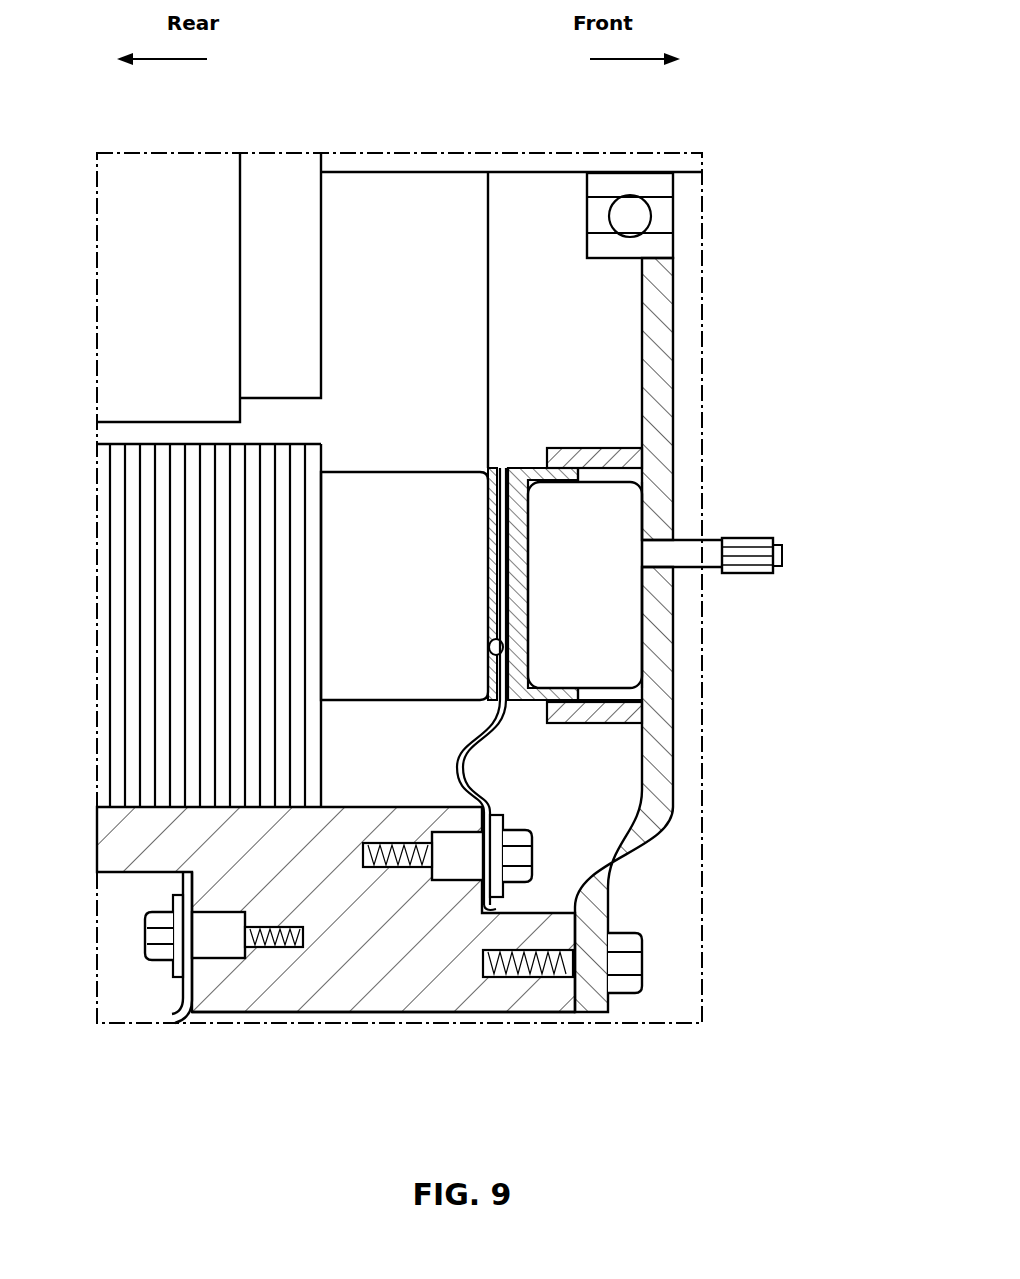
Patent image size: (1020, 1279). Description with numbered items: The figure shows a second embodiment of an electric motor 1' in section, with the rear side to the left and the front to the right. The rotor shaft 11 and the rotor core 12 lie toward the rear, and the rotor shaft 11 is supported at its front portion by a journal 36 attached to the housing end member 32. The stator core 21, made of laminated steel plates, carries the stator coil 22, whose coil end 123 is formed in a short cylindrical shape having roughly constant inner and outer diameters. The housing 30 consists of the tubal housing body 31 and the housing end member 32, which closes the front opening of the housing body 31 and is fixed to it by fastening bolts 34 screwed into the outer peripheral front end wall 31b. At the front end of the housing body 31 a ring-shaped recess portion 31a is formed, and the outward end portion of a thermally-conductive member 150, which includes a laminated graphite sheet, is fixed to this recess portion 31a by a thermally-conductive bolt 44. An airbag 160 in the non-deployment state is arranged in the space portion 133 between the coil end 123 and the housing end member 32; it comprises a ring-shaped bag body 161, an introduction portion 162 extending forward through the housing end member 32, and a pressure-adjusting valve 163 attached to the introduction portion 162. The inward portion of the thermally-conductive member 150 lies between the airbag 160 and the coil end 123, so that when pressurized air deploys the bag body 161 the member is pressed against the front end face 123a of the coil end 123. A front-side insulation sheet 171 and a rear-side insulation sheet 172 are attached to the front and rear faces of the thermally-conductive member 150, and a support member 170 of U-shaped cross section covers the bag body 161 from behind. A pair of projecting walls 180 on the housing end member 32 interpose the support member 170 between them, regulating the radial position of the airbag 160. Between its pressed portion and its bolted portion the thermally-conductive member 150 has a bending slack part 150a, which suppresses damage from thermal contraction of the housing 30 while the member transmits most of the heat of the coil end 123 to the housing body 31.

The electric motor 1' is at (450, 550).
The rotor shaft 11 is at (398, 172).
The rotor core 12 is at (146, 293).
The stator core 21 is at (186, 633).
The stator coil 22 is at (335, 443).
The housing 30 is at (355, 1030).
The housing body 31 is at (278, 995).
The recess portion 31a is at (440, 990).
The outer peripheral front end wall 31b is at (548, 995).
The housing end member 32 is at (680, 398).
The fastening bolt 34 is at (645, 965).
The journal 36 is at (662, 244).
The thermally-conductive bolt 44 is at (528, 857).
The coil end 123 is at (375, 603).
The front end face 123a is at (496, 656).
The space portion 133 is at (636, 697).
The thermally-conductive member 150 is at (510, 733).
The slack part 150a is at (458, 762).
The airbag 160 is at (650, 640).
The bag body 161 is at (565, 603).
The introduction portion 162 is at (688, 550).
The pressure-adjusting valve 163 is at (757, 574).
The support member 170 is at (528, 468).
The front-side insulation sheet 171 is at (494, 466).
The rear-side insulation sheet 172 is at (490, 470).
The projecting walls 180 is at (598, 449).